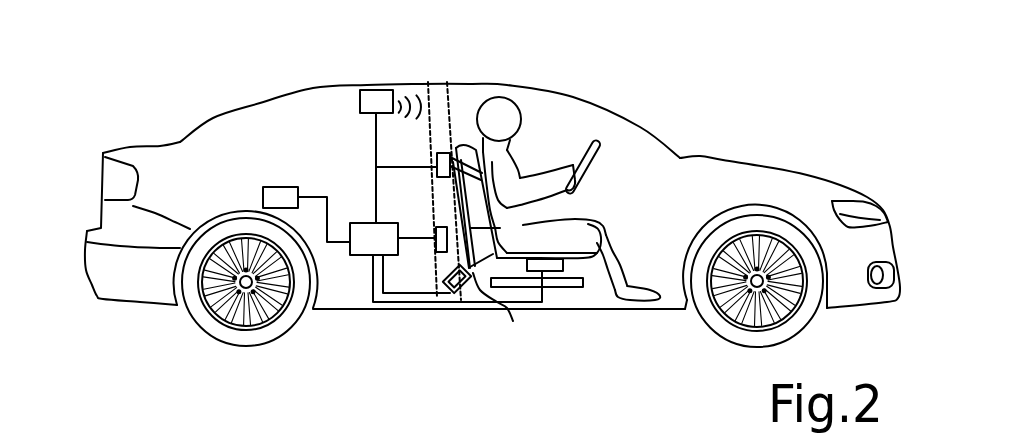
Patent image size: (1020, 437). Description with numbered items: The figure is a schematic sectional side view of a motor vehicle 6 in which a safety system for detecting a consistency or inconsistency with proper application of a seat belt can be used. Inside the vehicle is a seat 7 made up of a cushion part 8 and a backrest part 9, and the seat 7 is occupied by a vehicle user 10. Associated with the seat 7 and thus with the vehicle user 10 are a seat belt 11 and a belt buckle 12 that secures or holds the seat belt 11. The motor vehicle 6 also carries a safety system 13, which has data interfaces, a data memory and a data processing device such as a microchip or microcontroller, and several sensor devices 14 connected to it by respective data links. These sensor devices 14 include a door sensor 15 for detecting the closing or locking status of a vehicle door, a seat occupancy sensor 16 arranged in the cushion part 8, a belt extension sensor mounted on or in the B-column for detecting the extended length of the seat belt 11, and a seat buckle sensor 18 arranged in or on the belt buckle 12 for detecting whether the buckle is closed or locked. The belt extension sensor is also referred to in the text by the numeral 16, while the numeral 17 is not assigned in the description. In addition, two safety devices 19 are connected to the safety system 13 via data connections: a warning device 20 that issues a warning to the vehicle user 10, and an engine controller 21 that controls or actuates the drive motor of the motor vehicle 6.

The motor vehicle 6 is at (764, 170).
The seat 7 is at (555, 312).
The cushion part 8 is at (583, 267).
The backrest part 9 is at (528, 228).
The vehicle user 10 is at (601, 241).
The seat belt 11 is at (481, 170).
The belt buckle 12 is at (448, 341).
The safety system 13 is at (363, 244).
The sensor devices 14 is at (366, 201).
The door sensor 15 is at (436, 230).
The seat occupancy sensor 16 is at (550, 271).
The belt deflection sensor 17 is at (447, 152).
The seat buckle sensor 18 is at (465, 292).
The safety devices 19 is at (374, 62).
The warning device 20 is at (378, 97).
The engine controller 21 is at (263, 202).